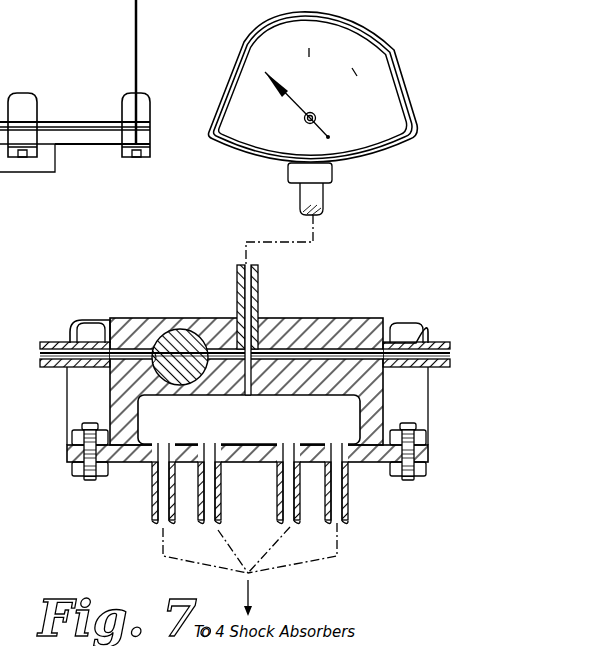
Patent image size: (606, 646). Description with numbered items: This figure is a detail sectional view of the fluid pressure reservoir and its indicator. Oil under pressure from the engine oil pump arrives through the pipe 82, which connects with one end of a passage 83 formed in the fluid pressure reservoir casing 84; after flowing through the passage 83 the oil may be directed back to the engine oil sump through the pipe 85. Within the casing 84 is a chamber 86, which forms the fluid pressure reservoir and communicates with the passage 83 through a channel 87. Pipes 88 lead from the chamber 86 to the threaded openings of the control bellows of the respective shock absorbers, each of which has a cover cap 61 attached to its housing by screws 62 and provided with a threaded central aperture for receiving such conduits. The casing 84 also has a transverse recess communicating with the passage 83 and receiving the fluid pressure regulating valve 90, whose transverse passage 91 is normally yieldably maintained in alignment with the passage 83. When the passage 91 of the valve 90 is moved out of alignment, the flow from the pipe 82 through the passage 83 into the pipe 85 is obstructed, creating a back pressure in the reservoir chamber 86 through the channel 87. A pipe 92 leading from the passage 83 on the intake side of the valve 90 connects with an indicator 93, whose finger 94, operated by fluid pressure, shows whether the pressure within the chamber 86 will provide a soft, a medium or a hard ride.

The cover cap 61 is at (97, 135).
The screws 62 is at (148, 152).
The pipe 82 is at (438, 340).
The passage 83 is at (355, 324).
The fluid pressure reservoir casing 84 is at (322, 324).
The pipe 85 is at (57, 368).
The chamber 86 is at (335, 423).
The channel 87 is at (248, 398).
The pipes 88 is at (330, 514).
The fluid pressure regulating valve 90 is at (188, 338).
The transverse passage 91 is at (168, 357).
The pipe 92 is at (259, 306).
The indicator 93 is at (355, 133).
The finger 94 is at (295, 101).